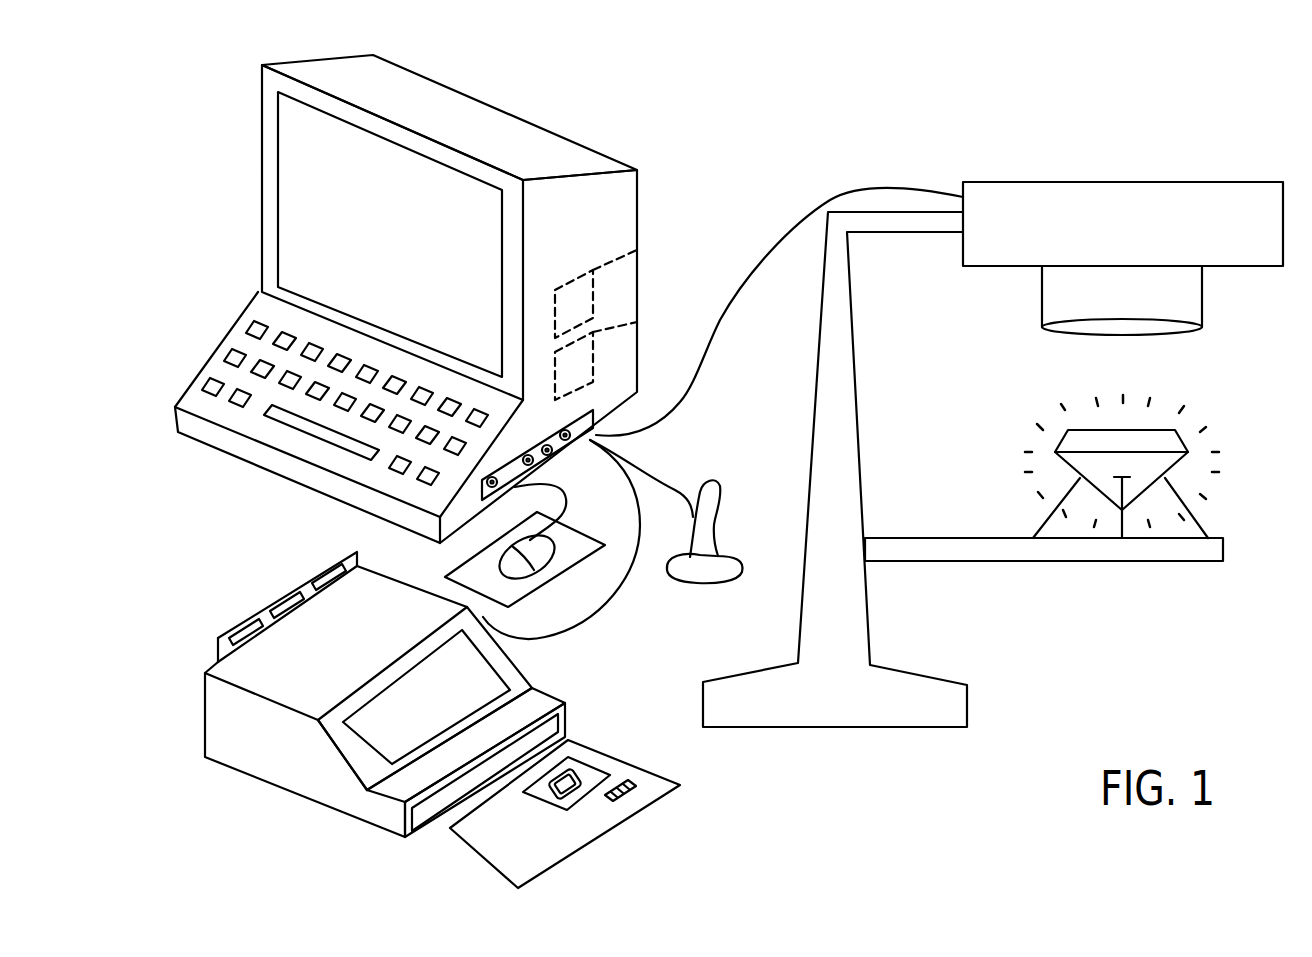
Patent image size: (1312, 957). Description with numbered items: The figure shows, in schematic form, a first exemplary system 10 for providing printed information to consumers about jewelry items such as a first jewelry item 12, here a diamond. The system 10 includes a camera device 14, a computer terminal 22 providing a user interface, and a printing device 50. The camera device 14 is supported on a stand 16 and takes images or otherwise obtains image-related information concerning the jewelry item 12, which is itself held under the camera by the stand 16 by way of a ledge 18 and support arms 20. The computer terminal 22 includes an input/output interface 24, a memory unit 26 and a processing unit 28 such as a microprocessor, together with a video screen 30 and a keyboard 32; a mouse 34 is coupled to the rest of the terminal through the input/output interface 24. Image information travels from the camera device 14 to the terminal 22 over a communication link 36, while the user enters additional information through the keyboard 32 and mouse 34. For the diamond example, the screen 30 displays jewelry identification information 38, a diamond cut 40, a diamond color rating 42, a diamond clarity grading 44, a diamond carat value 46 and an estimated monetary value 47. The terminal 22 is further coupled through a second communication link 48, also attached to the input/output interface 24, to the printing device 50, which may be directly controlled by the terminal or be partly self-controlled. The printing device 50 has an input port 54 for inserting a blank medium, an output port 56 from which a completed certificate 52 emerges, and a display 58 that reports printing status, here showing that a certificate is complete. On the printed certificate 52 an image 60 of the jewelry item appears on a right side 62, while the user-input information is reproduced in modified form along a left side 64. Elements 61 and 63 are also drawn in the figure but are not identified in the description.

The system 10 is at (829, 763).
The first jewelry item 12 is at (1201, 412).
The camera device 14 is at (1228, 284).
The stand 16 is at (806, 428).
The ledge 18 is at (1012, 560).
The support arms 20 is at (1196, 522).
The computer terminal 22 is at (563, 116).
The input/output interface 24 is at (593, 410).
The memory unit 26 is at (637, 250).
The processing unit 28 is at (637, 322).
The video screen 30 is at (320, 214).
The keyboard 32 is at (190, 380).
The mouse 34 is at (490, 572).
The communication link 36 is at (793, 206).
The jewelry identification information 38 is at (288, 110).
The diamond cut 40 is at (307, 150).
The diamond color rating 42 is at (305, 182).
The diamond clarity grading 44 is at (305, 212).
The diamond carat value 46 is at (305, 243).
The estimated monetary value of the diamond 47 is at (305, 268).
The second communication link 48 is at (623, 580).
The printing device 50 is at (408, 676).
The certificate 52 is at (583, 815).
The input port 54 is at (375, 552).
The output port 56 is at (572, 723).
The display 58 is at (500, 665).
The image 60 is at (619, 806).
The magnetic stripe 61 is at (638, 782).
The right side 62 is at (598, 803).
The input device 63 is at (716, 524).
The left side 64 is at (542, 852).